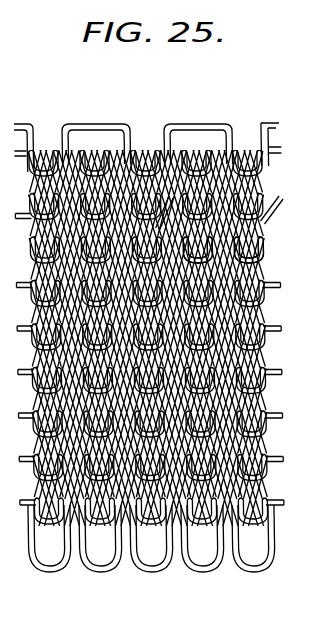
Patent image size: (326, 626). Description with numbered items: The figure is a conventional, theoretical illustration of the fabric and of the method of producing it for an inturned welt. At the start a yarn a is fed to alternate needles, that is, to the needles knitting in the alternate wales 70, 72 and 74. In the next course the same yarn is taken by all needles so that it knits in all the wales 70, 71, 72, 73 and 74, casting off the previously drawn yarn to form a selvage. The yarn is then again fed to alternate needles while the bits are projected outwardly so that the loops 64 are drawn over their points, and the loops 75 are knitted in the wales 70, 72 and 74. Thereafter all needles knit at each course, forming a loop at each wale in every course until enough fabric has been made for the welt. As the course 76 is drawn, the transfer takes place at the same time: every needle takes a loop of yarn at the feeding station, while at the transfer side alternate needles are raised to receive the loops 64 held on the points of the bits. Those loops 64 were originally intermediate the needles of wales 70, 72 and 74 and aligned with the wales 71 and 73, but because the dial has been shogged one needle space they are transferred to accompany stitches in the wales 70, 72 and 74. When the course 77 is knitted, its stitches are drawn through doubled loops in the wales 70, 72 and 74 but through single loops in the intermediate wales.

The wale 70 is at (42, 160).
The wale 71 is at (94, 124).
The wale 72 is at (145, 160).
The wale 73 is at (194, 124).
The wale 74 is at (245, 160).
The yarn a is at (266, 124).
The loops 75 is at (160, 228).
The loops 64 is at (159, 268).
The course 76 is at (263, 485).
The course 77 is at (263, 538).